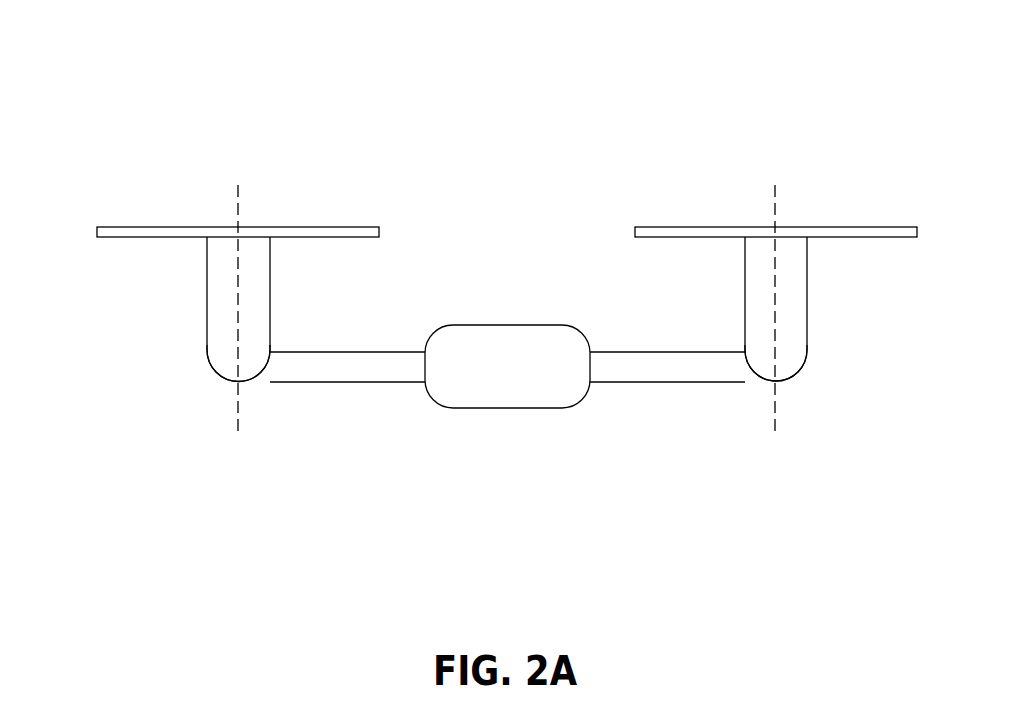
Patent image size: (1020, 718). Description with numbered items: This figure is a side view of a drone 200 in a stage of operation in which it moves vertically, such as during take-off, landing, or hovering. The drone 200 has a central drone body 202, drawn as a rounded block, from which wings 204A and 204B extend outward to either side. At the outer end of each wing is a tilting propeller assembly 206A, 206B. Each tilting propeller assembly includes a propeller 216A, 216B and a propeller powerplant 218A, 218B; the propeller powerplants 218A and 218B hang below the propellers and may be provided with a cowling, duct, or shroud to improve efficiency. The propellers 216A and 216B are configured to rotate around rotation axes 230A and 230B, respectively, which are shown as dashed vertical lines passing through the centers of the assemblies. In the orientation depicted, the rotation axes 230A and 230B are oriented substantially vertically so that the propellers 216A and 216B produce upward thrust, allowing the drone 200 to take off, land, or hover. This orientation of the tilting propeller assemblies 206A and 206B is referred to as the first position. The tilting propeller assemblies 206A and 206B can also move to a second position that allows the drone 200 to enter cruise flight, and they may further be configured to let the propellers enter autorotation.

The drone 200 is at (175, 72).
The drone body 202 is at (516, 409).
The wing 204A is at (336, 386).
The wing 204B is at (678, 386).
The tilting propeller assembly 206A is at (210, 377).
The tilting propeller assembly 206B is at (812, 366).
The propeller 216A is at (305, 223).
The propeller 216B is at (738, 223).
The propeller powerplant 218A is at (207, 315).
The propeller powerplant 218B is at (809, 255).
The rotation axis 230A is at (236, 197).
The rotation axis 230B is at (777, 197).